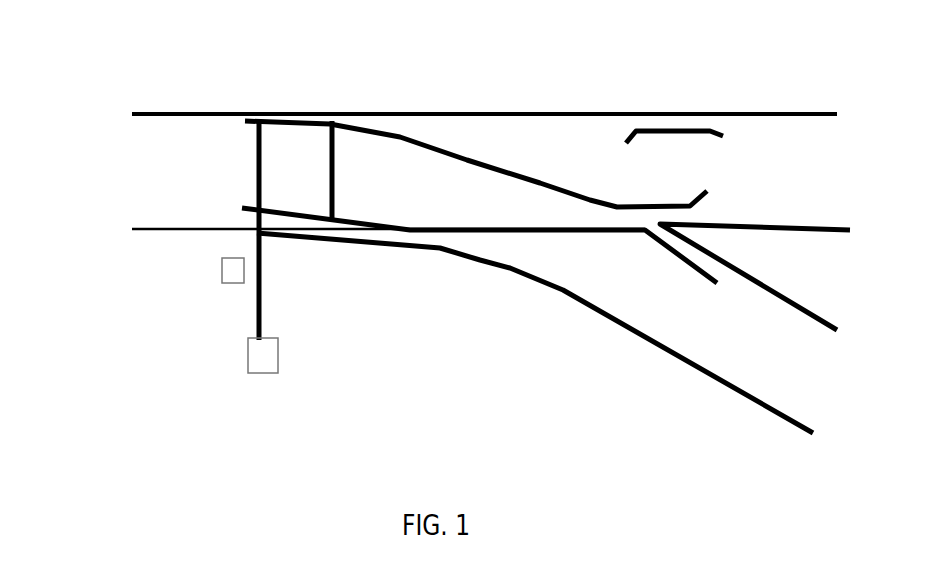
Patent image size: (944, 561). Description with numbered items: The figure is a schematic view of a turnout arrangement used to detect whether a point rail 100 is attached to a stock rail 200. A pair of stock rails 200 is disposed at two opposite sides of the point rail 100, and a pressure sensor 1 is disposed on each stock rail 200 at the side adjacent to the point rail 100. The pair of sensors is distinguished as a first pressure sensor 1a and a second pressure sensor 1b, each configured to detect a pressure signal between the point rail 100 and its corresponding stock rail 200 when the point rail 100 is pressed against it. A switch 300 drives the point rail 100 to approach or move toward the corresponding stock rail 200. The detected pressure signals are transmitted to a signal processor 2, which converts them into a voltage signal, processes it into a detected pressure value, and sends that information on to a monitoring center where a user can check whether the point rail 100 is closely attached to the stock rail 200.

The pressure sensor 1 is at (429, 221).
The first pressure sensor 1a is at (401, 110).
The second pressure sensor 1b is at (446, 279).
The signal processor 2 is at (173, 283).
The point rail 100 is at (368, 232).
The stock rail 200 is at (400, 112).
The switch 300 is at (260, 269).